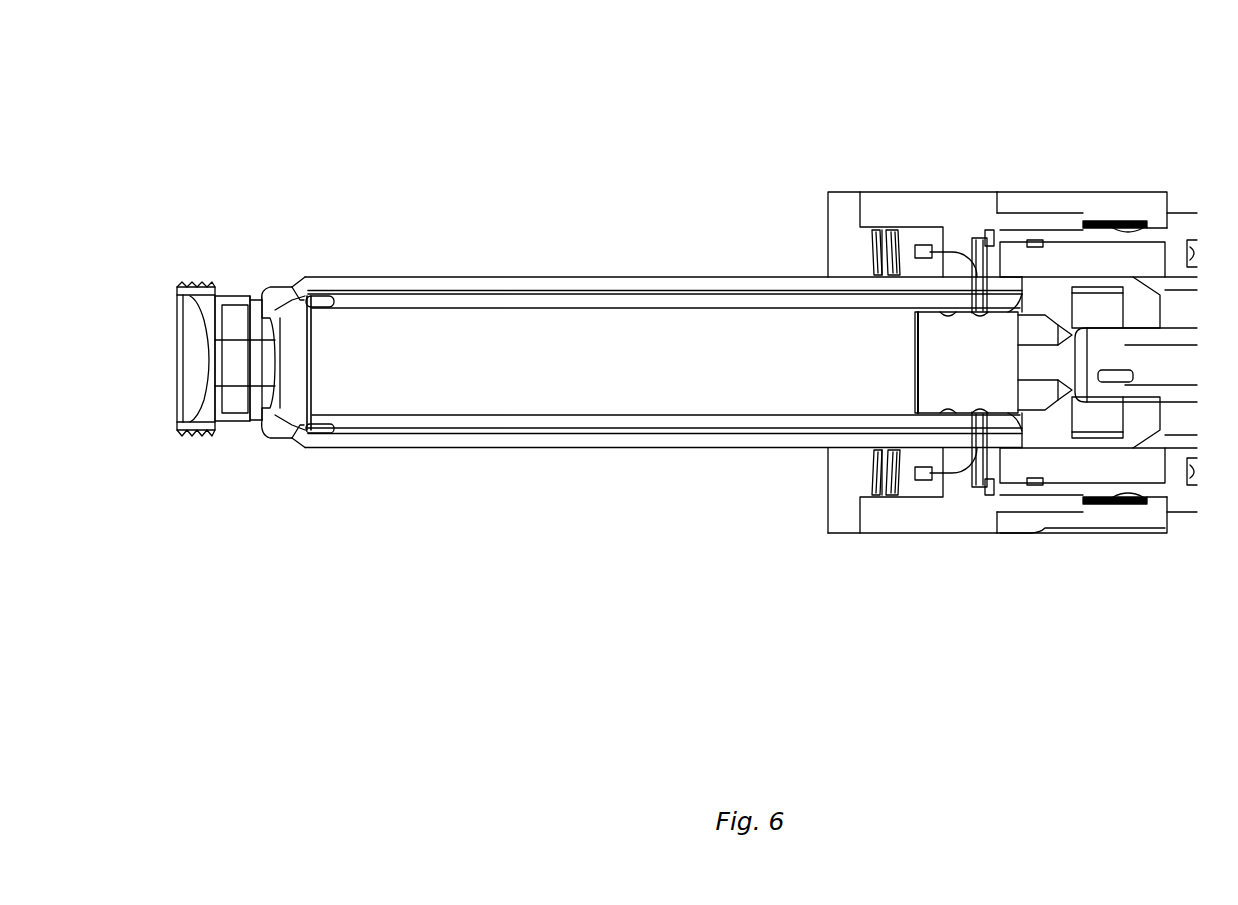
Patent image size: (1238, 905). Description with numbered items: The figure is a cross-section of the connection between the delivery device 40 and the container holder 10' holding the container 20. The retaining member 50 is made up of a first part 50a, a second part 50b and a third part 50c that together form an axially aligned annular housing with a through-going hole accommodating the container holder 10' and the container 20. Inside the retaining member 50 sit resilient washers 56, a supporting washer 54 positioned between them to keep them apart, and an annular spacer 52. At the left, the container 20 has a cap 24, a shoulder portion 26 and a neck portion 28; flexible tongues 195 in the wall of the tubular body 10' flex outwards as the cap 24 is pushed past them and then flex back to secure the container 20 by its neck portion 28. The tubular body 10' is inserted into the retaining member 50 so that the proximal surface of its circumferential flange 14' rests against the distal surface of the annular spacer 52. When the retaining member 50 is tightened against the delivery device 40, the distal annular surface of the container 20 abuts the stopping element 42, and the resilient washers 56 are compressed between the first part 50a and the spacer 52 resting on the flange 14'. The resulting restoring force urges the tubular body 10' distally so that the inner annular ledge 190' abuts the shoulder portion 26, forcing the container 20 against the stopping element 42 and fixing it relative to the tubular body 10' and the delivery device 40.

The container holder 10' is at (684, 355).
The container 20 is at (583, 420).
The cap 24 is at (214, 288).
The shoulder portion 26 is at (292, 288).
The neck portion 28 is at (268, 433).
The flexible tongues 195 is at (276, 432).
The inner annular ledge 190' is at (333, 452).
The retaining member 50 is at (979, 355).
The first part 50a is at (838, 192).
The second part 50b is at (925, 192).
The third part 50c is at (1102, 192).
The resilient washer 56 is at (873, 496).
The supporting washer 54 is at (888, 496).
The annular spacer 52 is at (937, 456).
The circumferential flange 14' is at (1007, 508).
The delivery device 40 is at (1098, 356).
The stopping element 42 is at (1000, 500).